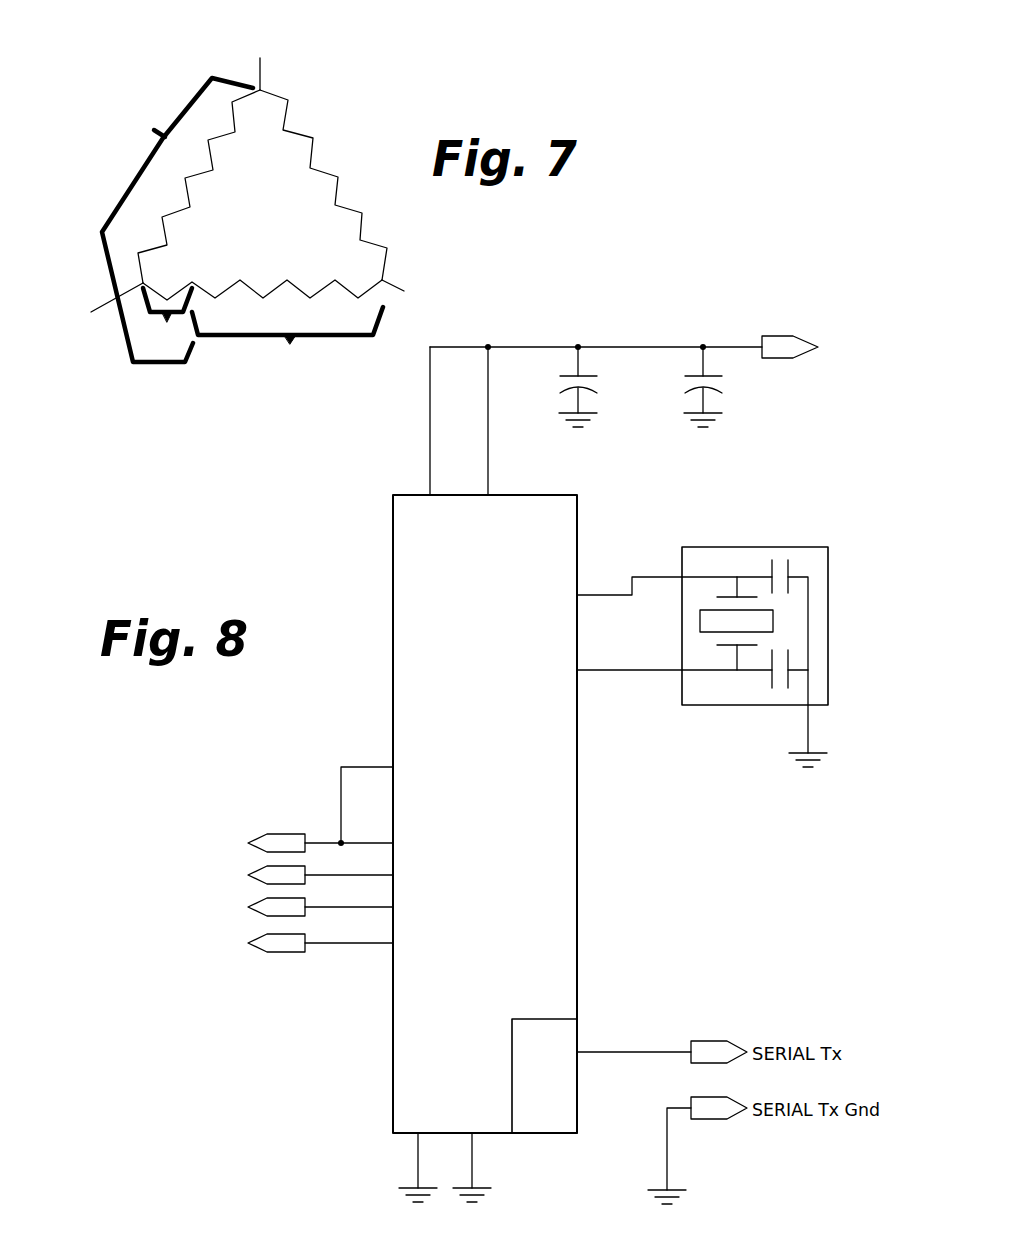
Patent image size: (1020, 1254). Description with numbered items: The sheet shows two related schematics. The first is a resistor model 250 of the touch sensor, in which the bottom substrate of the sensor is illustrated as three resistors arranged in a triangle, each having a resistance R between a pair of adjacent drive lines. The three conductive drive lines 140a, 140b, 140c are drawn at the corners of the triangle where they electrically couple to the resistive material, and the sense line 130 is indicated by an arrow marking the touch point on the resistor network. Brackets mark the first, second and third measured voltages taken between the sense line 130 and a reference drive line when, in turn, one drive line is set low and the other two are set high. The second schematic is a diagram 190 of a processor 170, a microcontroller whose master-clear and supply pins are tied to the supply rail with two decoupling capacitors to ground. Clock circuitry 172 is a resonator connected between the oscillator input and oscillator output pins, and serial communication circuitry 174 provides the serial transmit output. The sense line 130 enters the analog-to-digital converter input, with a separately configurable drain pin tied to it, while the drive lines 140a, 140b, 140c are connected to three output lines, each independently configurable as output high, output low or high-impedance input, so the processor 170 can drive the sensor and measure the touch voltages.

In FIG. 7, the resistor model 250 is at (386, 106).
In FIG. 7, the sense line 130 is at (195, 275).
In FIG. 8, the sense line 130 is at (302, 844).
In FIG. 7, the conductive drive line 140a is at (92, 307).
In FIG. 8, the conductive drive line 140a is at (298, 876).
In FIG. 7, the conductive drive line 140b is at (262, 61).
In FIG. 8, the conductive drive line 140b is at (298, 908).
In FIG. 7, the conductive drive line 140c is at (411, 297).
In FIG. 8, the conductive drive line 140c is at (298, 944).
In FIG. 8, the schematic diagram 190 is at (811, 290).
In FIG. 8, the processor 170 is at (393, 532).
In FIG. 8, the clock circuitry 172 is at (828, 578).
In FIG. 8, the serial communication circuitry 174 is at (540, 1019).